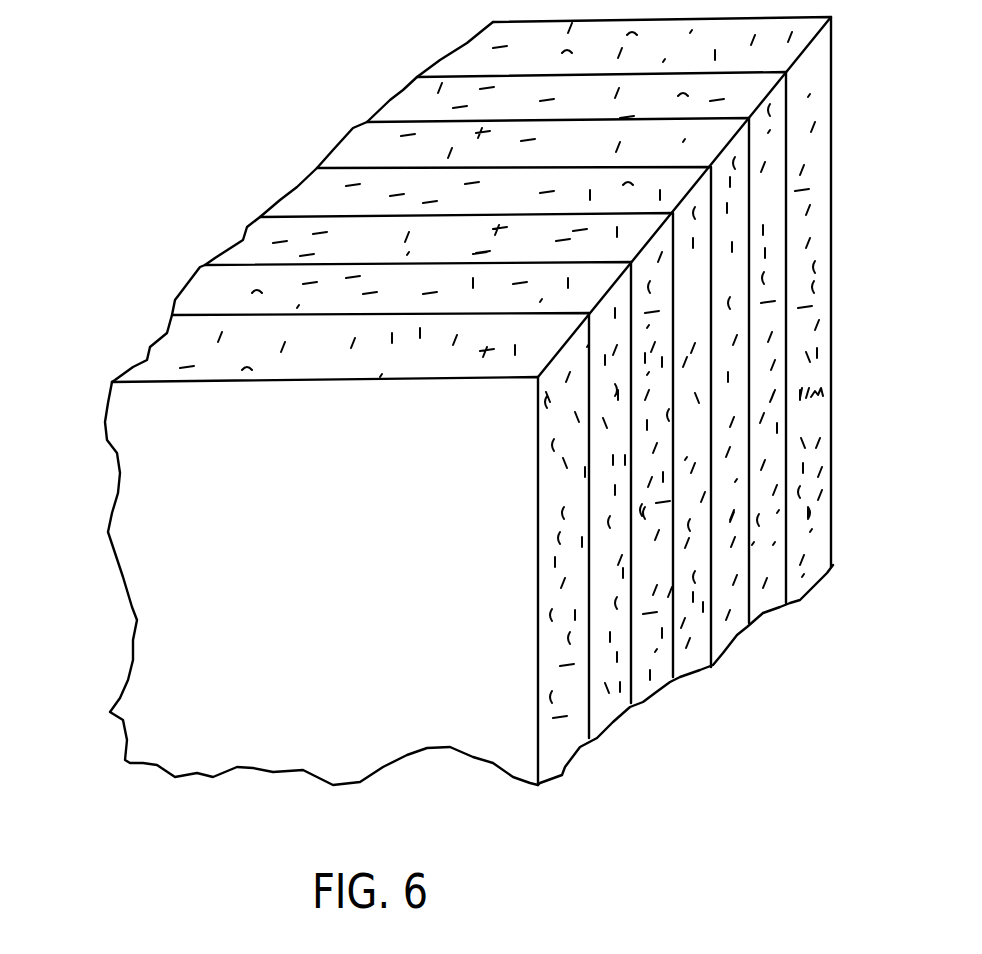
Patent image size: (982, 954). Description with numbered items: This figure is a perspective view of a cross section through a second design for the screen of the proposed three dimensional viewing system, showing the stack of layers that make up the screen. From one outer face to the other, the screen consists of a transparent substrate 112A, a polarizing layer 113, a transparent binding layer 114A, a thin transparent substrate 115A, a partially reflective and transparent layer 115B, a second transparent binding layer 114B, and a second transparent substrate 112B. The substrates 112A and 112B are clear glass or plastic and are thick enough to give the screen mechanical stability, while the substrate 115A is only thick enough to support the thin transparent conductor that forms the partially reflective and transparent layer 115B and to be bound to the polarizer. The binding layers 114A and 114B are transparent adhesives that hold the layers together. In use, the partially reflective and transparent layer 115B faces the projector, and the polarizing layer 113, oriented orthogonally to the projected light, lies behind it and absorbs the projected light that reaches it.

The transparent substrate 112A is at (565, 777).
The transparent substrate 112B is at (810, 590).
The polarizing layer 113 is at (472, 428).
The transparent binding layer 114A is at (655, 682).
The transparent binding layer 114B is at (393, 98).
The transparent substrate 115A is at (292, 190).
The partially reflective and transparent layer 115B is at (735, 647).